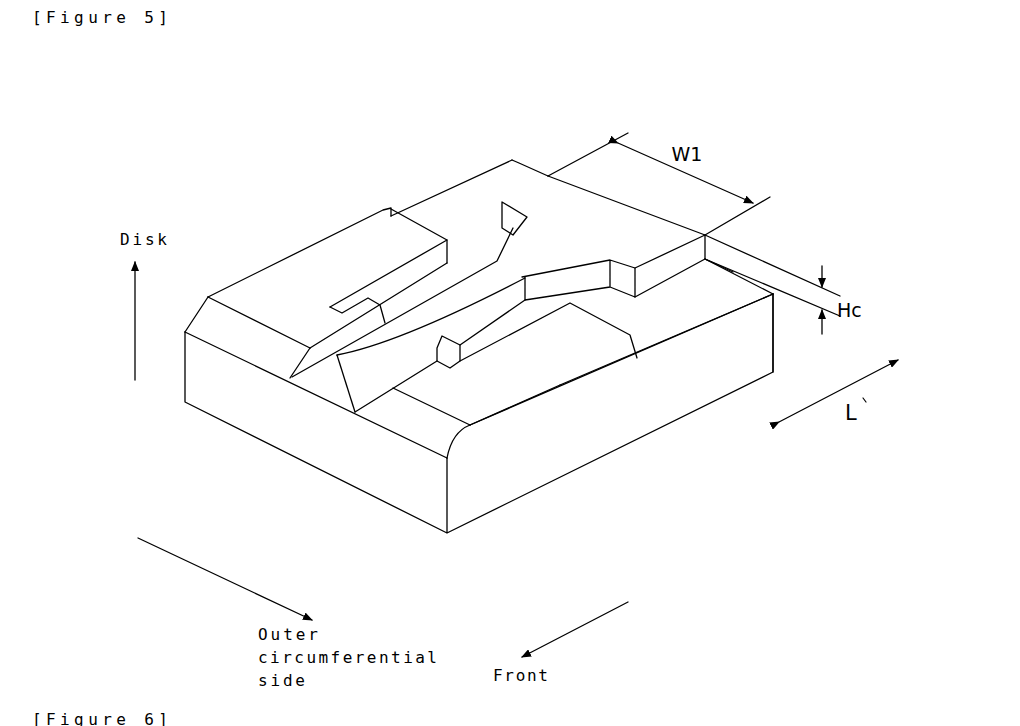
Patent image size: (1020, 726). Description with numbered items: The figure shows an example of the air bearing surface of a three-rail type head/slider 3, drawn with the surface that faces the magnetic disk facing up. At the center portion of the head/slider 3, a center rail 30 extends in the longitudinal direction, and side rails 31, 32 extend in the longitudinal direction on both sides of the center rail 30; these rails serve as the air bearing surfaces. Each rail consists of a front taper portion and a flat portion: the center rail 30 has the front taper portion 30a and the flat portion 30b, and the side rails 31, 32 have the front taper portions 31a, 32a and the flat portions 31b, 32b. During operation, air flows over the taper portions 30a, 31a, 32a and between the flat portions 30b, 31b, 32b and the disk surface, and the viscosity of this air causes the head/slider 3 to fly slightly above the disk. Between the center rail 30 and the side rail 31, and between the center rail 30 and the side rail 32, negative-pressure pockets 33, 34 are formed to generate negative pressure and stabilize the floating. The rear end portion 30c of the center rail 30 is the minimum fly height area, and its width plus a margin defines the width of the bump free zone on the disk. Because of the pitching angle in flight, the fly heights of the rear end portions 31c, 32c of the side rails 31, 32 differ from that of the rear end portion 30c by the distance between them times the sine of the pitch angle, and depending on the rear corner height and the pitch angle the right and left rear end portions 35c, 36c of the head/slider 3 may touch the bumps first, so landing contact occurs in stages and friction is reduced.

The head/slider 3 is at (317, 92).
The center rail 30 is at (398, 328).
The front taper portion 30a is at (330, 383).
The flat portion 30b is at (545, 207).
The rear end portion 30c is at (687, 222).
The side rail 31 is at (288, 288).
The front taper portion 31a is at (238, 335).
The flat portion 31b is at (327, 268).
The rear end portion 31c is at (421, 222).
The side rail 32 is at (553, 357).
The front taper portion 32a is at (455, 440).
The flat portion 32b is at (515, 382).
The rear end portion 32c is at (547, 303).
The negative-pressure pocket 33 is at (443, 282).
The negative-pressure pocket 34 is at (775, 350).
The rear end portion of the head/slider 35c is at (517, 160).
The rear end portion of the head/slider 36c is at (733, 268).